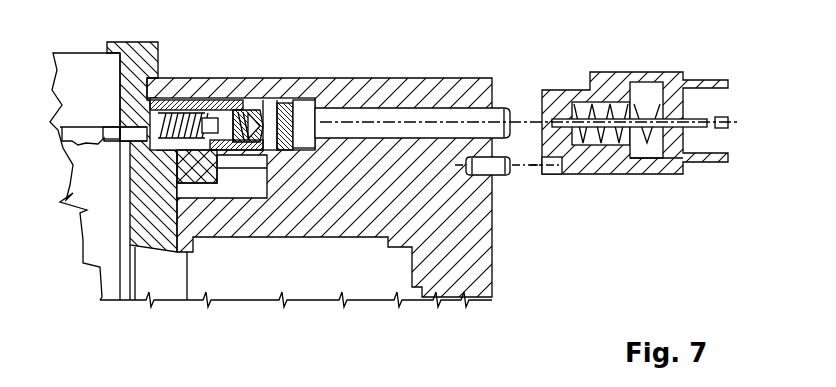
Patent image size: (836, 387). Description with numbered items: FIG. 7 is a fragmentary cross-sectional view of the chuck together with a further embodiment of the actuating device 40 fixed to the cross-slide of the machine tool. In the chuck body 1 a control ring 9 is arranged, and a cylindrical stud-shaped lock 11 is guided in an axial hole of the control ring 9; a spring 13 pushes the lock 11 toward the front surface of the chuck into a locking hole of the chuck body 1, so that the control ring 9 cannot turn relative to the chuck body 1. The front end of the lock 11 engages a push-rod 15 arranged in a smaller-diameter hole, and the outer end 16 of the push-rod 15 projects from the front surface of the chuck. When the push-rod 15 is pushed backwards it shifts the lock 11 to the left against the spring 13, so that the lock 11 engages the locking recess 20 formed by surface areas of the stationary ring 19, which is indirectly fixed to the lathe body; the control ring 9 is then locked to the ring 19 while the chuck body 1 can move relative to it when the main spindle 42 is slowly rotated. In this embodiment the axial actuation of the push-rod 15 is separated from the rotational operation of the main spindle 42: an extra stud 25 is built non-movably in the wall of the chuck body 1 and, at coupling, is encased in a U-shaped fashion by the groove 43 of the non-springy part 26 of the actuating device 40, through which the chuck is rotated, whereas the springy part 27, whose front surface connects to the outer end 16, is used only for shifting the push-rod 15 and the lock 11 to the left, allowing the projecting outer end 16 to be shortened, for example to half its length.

The chuck body 1 is at (348, 88).
The control ring 9 is at (188, 168).
The lock 11 is at (280, 107).
The spring 13 is at (242, 110).
The push-rod 15 is at (422, 117).
The outer end of the push-rod 16 is at (498, 117).
The ring 19 is at (138, 58).
The locking recess 20 is at (130, 110).
The stud 25 is at (496, 172).
The non-springy part 26 is at (627, 167).
The springy part 27 is at (610, 93).
The actuating device 40 is at (672, 122).
The main spindle 42 is at (83, 152).
The groove 43 is at (552, 167).